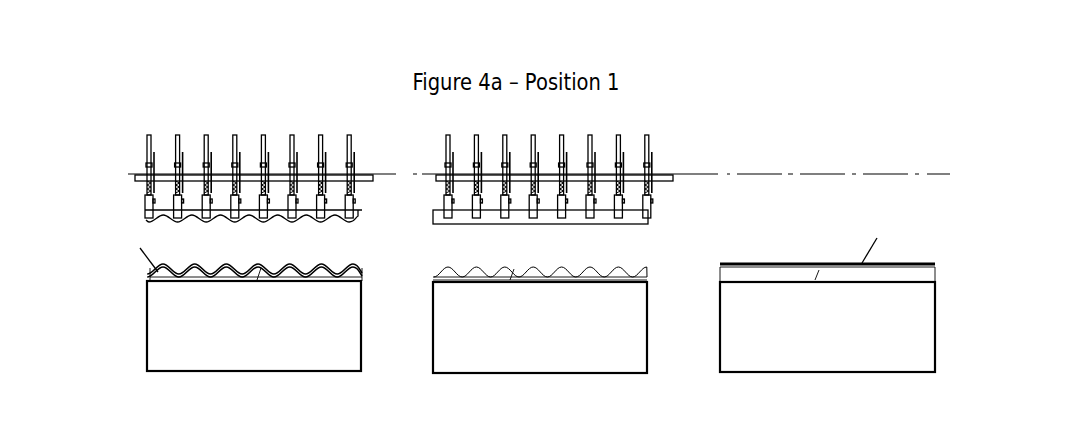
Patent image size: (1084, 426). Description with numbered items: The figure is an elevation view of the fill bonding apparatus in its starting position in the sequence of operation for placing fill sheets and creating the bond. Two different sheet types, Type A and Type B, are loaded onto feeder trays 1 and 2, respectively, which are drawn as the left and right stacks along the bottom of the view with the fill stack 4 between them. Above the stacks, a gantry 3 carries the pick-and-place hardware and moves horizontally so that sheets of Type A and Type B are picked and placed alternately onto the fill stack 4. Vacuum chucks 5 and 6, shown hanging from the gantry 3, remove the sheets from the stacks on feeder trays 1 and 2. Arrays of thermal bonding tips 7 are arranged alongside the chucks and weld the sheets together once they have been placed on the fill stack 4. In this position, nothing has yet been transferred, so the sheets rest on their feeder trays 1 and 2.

The feeder tray 1 is at (163, 360).
The feeder tray 2 is at (745, 362).
The gantry 3 is at (668, 175).
The fill stack 4 is at (453, 360).
The vacuum chuck 5 is at (365, 212).
The vacuum chuck 6 is at (652, 208).
The array of thermal bonding tips 7 is at (650, 145).